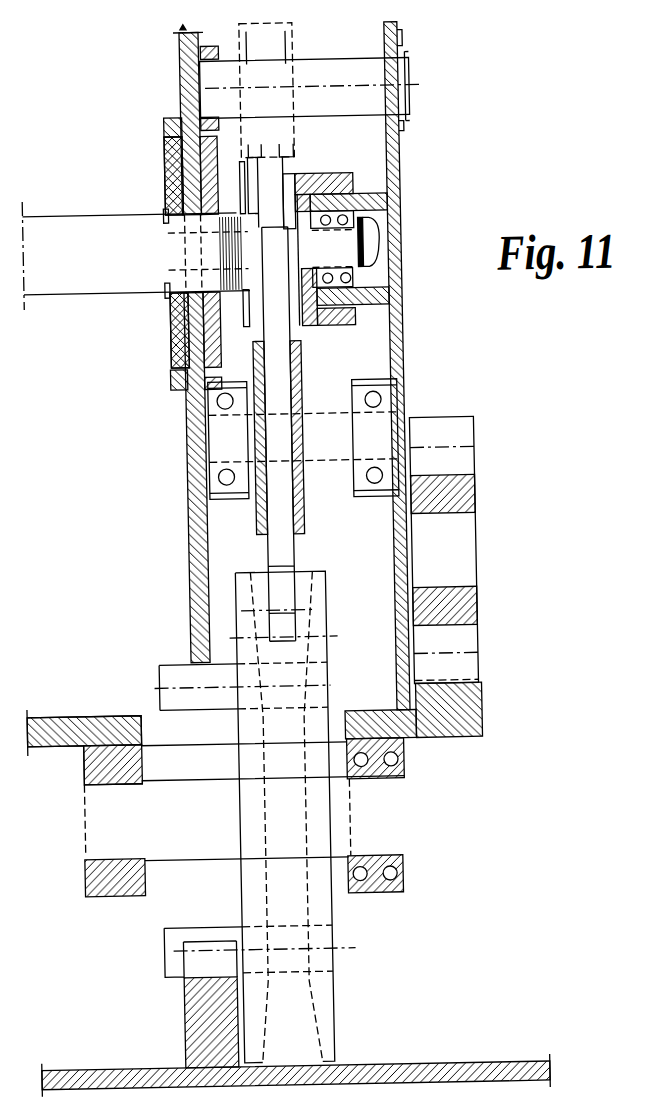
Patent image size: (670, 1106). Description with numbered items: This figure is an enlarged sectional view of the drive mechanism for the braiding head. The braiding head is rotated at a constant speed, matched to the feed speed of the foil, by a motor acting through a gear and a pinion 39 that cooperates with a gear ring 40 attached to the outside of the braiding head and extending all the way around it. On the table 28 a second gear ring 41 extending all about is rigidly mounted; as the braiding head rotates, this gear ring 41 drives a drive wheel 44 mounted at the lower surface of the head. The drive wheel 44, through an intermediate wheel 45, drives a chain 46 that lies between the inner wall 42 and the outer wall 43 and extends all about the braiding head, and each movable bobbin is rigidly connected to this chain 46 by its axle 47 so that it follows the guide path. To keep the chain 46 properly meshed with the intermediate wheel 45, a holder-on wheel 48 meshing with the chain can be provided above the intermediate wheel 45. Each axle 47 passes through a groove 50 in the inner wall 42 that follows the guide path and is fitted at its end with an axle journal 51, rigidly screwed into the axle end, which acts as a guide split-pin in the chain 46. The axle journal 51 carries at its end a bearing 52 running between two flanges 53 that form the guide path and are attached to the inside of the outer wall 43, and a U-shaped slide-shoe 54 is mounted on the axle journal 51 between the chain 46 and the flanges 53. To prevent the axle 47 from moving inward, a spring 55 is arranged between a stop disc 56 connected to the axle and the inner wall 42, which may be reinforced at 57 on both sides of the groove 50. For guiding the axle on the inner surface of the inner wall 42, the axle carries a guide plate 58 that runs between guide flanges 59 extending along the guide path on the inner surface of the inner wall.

The table 28 is at (491, 1065).
The pinion 39 is at (477, 474).
The gear ring 40 is at (475, 710).
The gear ring 41 is at (176, 1006).
The inner wall 42 is at (198, 435).
The outer wall 43 is at (403, 362).
The drive wheel 44 is at (328, 914).
The intermediate wheel 45 is at (284, 336).
The chain 46 is at (337, 201).
The axle 47 is at (100, 211).
The holder-on wheel 48 is at (280, 174).
The groove 50 is at (176, 294).
The axle journal 51 is at (346, 237).
The bearing 52 is at (326, 229).
The flanges 53 is at (362, 187).
The U-shaped slide-shoe 54 is at (297, 177).
The spring 55 is at (227, 200).
The stop disc 56 is at (227, 190).
The reinforcement 57 is at (190, 329).
The guide plate 58 is at (180, 315).
The guide flanges 59 is at (179, 120).